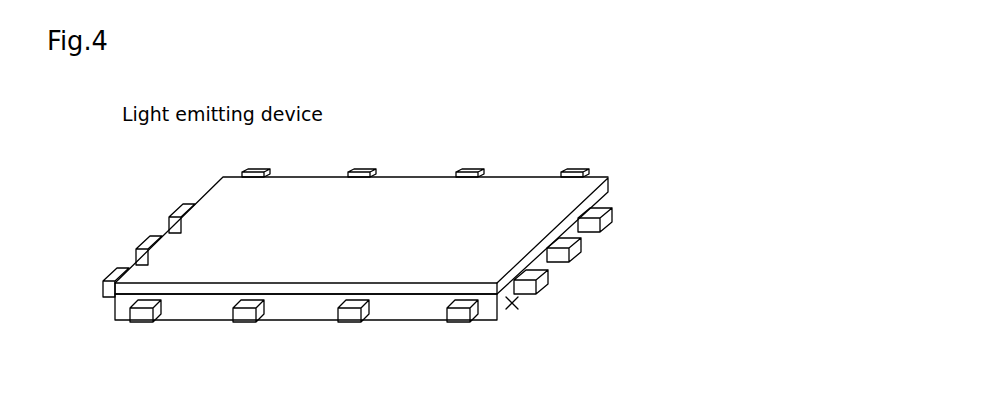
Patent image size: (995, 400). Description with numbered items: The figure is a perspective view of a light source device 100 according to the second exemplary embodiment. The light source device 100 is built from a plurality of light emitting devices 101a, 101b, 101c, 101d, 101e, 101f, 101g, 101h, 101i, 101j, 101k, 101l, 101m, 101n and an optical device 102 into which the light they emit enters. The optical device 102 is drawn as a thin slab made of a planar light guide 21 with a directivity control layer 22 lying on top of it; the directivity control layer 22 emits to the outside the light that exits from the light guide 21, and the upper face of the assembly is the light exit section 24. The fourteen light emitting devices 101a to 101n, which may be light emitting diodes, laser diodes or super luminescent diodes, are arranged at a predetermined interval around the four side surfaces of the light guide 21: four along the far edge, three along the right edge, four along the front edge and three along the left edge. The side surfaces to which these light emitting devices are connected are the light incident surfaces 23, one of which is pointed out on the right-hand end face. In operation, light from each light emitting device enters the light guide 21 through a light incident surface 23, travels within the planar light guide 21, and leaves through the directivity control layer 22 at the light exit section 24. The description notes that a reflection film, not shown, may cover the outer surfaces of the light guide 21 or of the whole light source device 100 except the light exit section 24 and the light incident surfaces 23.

The light source device 100 is at (428, 110).
The optical device 102 is at (817, 105).
The light guide 21 is at (610, 198).
The directivity control layer 22 is at (600, 183).
The light incident surface 23 is at (520, 306).
The light exit section 24 is at (347, 232).
The light emitting device 101a is at (276, 150).
The light emitting device 101b is at (368, 172).
The light emitting device 101c is at (493, 150).
The light emitting device 101d is at (600, 150).
The light emitting device 101e is at (612, 214).
The light emitting device 101f is at (572, 253).
The light emitting device 101g is at (541, 286).
The light emitting device 101h is at (452, 323).
The light emitting device 101i is at (348, 323).
The light emitting device 101j is at (243, 323).
The light emitting device 101k is at (137, 323).
The light emitting device 101l is at (108, 279).
The light emitting device 101m is at (143, 247).
The light emitting device 101n is at (178, 215).